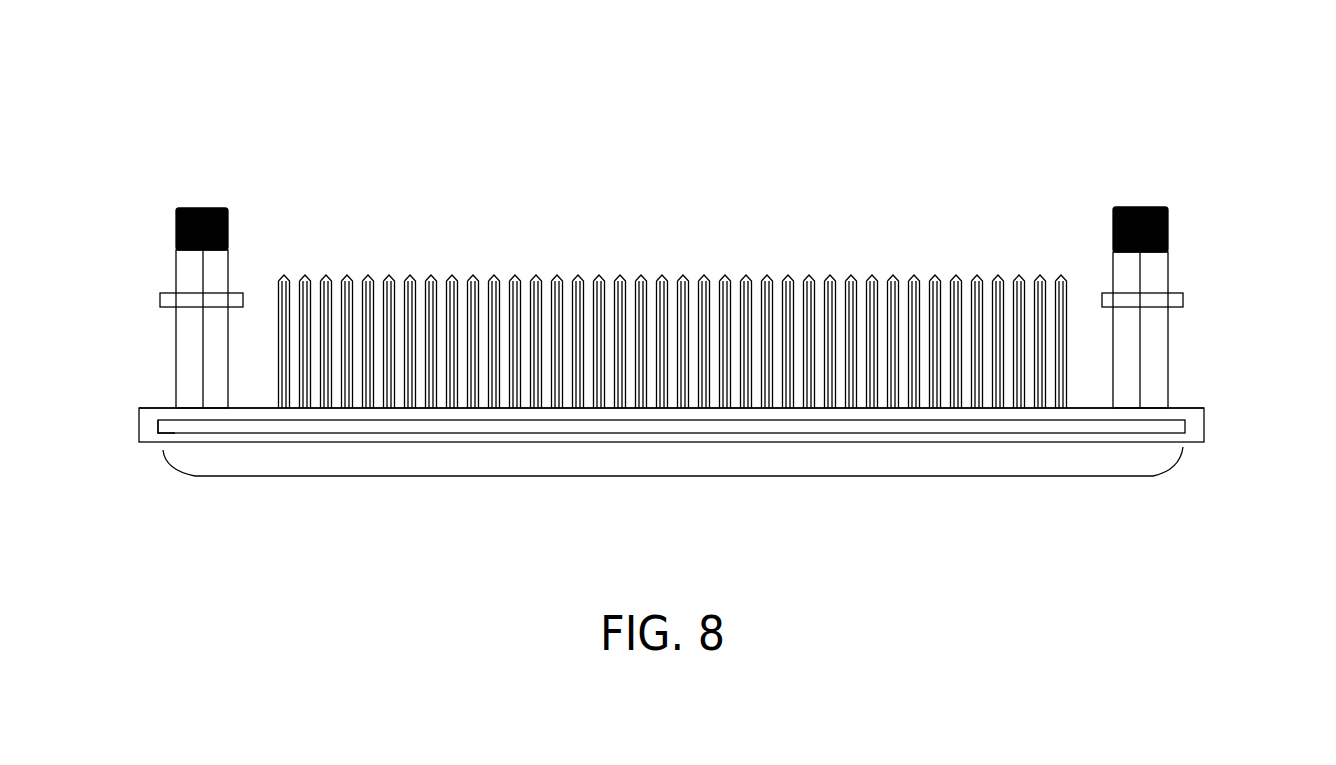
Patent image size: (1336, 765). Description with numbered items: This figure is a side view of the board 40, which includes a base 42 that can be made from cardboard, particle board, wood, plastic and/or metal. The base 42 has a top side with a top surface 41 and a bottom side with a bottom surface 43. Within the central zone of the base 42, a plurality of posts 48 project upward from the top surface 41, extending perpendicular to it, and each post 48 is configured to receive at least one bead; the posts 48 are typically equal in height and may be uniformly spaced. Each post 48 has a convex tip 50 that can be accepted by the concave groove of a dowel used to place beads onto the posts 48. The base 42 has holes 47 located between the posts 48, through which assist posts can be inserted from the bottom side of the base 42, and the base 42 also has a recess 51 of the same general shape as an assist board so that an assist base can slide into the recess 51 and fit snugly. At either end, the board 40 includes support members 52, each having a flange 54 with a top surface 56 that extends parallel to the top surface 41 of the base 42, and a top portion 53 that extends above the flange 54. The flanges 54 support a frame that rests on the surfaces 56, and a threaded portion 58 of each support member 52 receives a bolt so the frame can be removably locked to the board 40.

The board 40 is at (650, 205).
The top surface 41 is at (252, 408).
The base 42 is at (1204, 426).
The bottom surface 43 is at (155, 437).
The holes 47 is at (1047, 416).
The posts 48 is at (692, 305).
The convex tip 50 is at (955, 275).
The recess 51 is at (672, 478).
The support members 52 is at (172, 190).
The top portions 53 is at (1168, 296).
The flanges 54 is at (243, 300).
The top surface of flange 56 is at (232, 292).
The threaded portion 58 is at (1115, 212).